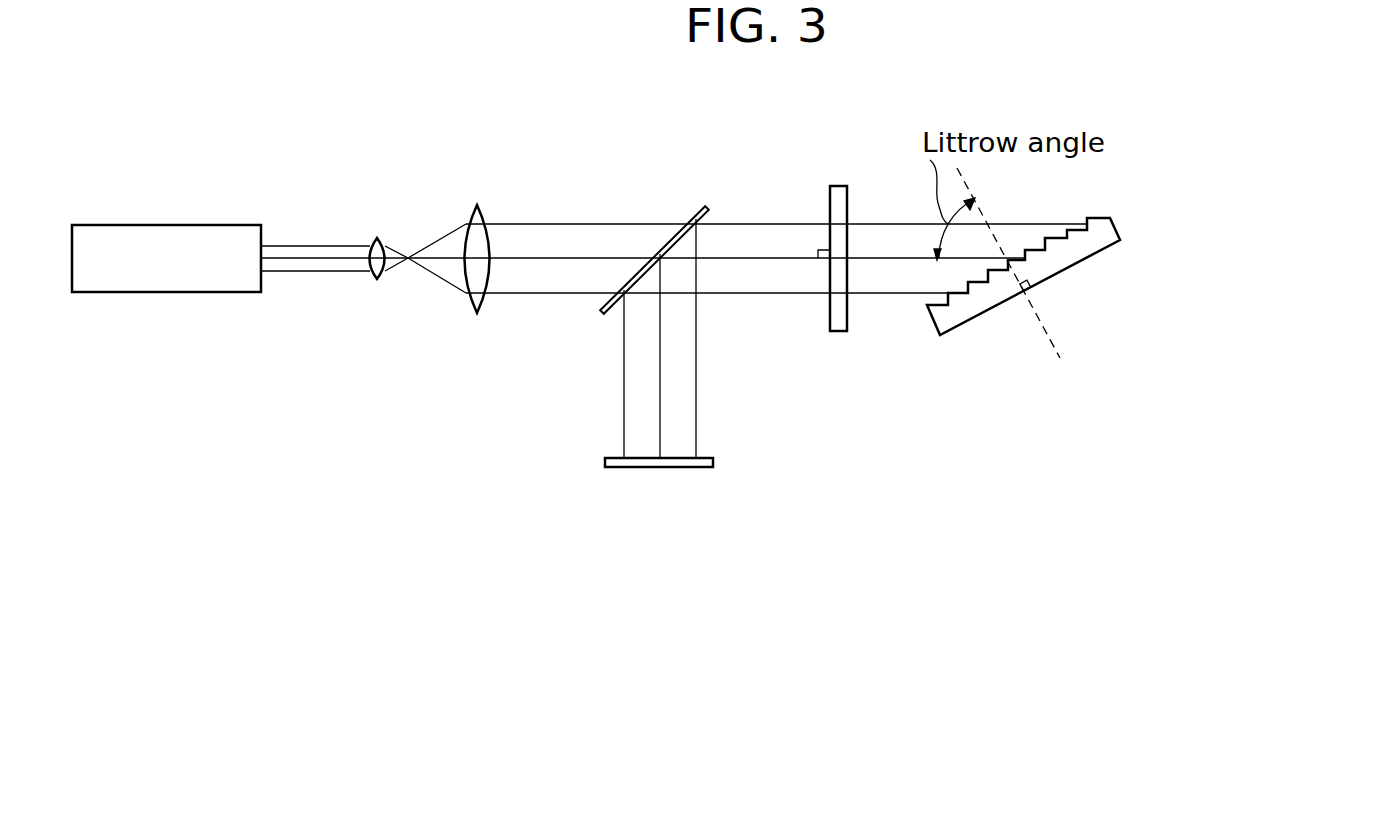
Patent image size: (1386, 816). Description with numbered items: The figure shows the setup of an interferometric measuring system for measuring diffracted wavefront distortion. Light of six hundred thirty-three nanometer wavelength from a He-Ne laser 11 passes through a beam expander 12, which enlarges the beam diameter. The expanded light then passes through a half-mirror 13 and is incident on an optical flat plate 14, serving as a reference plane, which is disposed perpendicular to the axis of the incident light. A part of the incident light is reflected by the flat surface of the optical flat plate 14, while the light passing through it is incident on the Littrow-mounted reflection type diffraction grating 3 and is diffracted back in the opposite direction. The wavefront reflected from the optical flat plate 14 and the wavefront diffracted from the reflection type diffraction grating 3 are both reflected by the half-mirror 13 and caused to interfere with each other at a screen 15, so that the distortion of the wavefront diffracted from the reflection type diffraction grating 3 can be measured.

The He-Ne laser 11 is at (157, 290).
The beam expander 12 is at (490, 175).
The half-mirror 13 is at (691, 211).
The optical flat plate 14 is at (838, 332).
The screen 15 is at (660, 468).
The reflection type diffraction grating 3 is at (1062, 288).